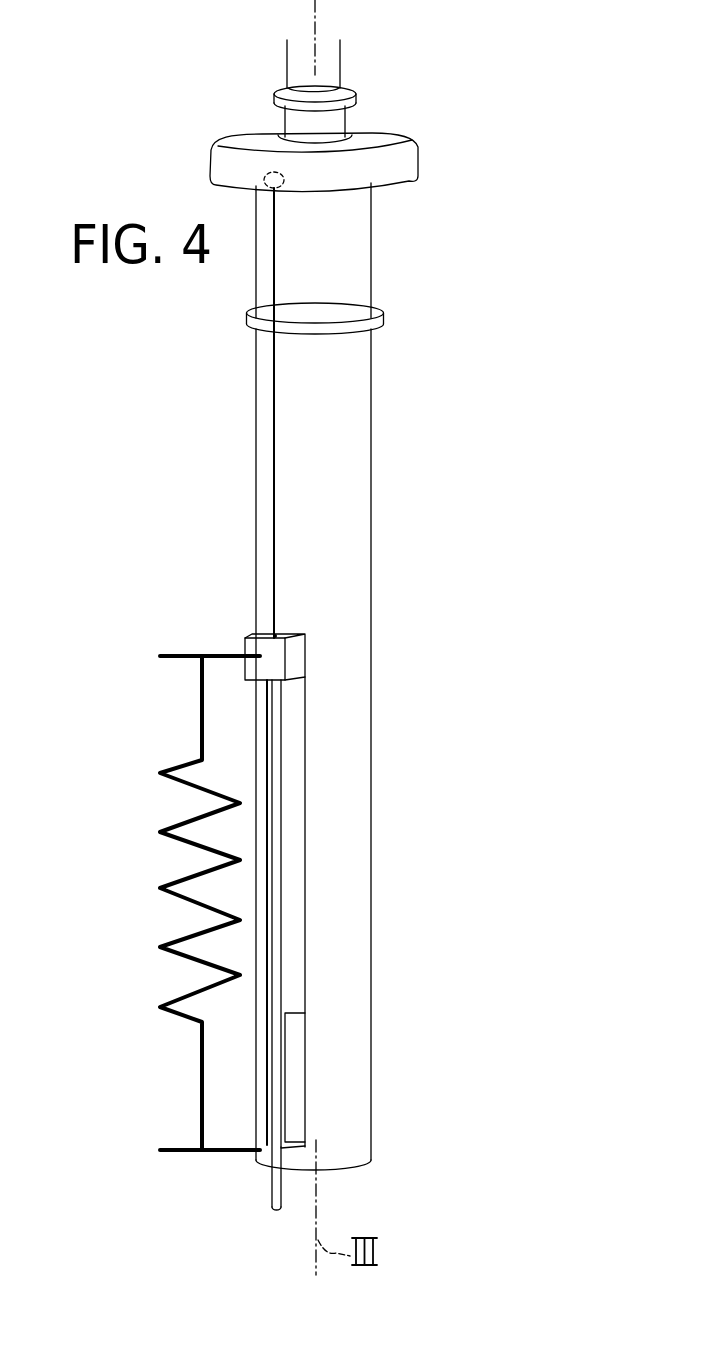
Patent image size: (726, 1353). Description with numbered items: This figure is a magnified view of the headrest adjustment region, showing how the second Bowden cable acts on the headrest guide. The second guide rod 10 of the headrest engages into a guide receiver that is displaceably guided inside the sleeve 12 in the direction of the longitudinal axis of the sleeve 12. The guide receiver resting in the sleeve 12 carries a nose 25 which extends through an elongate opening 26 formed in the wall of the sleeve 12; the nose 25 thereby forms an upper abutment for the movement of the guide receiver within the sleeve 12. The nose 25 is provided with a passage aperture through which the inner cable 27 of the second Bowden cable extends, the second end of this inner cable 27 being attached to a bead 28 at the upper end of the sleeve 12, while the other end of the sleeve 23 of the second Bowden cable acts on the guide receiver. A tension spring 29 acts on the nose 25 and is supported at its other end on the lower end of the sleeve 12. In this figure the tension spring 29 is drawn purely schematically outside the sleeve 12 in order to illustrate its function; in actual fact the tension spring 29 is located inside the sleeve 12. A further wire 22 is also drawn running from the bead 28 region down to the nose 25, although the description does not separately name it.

The second guide rod 10 is at (338, 129).
The bead 28 is at (387, 172).
The sleeve 12 is at (348, 549).
The wire 22 is at (273, 421).
The nose 25 is at (297, 660).
The inner cable 27 is at (275, 636).
The tension spring 29 is at (178, 898).
The elongate opening 26 is at (296, 1075).
The sleeve of the second Bowden cable 23 is at (276, 1183).